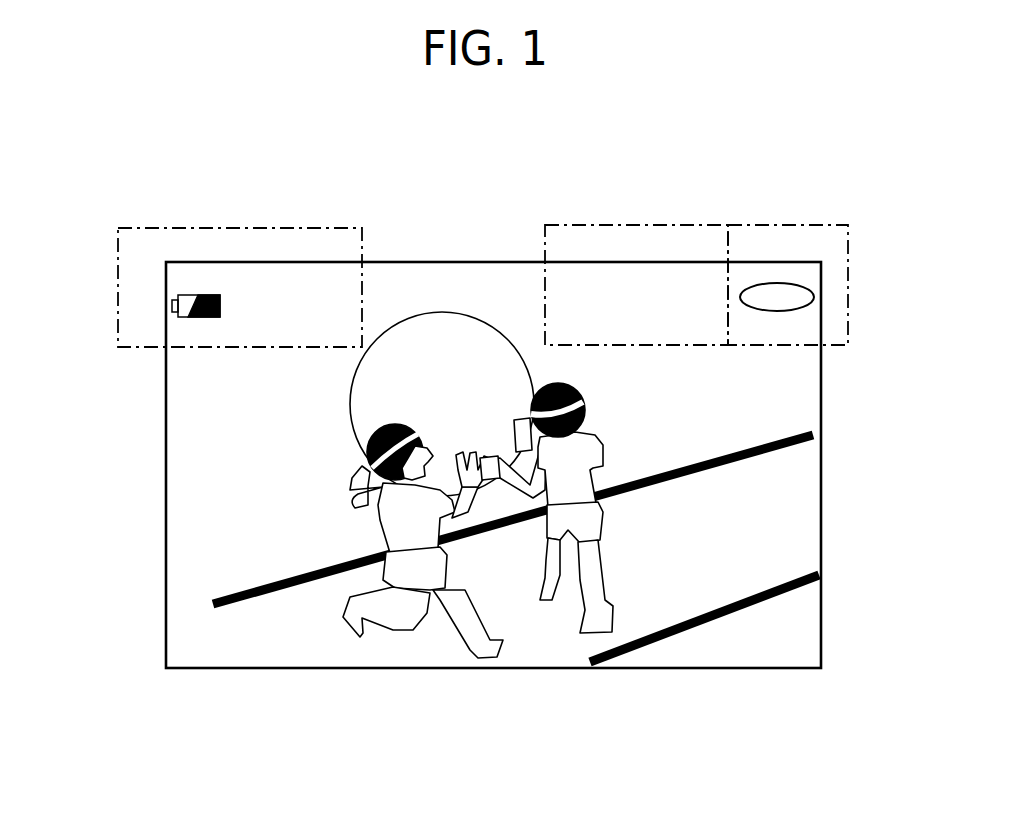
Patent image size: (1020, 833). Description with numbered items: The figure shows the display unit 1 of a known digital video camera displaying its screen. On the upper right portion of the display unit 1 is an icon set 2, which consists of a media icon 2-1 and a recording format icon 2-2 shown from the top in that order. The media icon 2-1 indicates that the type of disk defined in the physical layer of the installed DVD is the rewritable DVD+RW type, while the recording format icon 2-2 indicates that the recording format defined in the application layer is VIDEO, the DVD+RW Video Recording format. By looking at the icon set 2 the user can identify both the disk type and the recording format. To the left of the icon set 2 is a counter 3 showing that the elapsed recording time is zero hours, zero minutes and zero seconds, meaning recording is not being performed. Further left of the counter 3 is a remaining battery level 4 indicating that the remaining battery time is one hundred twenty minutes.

The display unit 1 is at (410, 668).
The icon set 2 is at (828, 234).
The media icon 2-1 is at (810, 290).
The recording format icon 2-2 is at (813, 327).
The counter 3 is at (637, 222).
The remaining battery level 4 is at (117, 293).